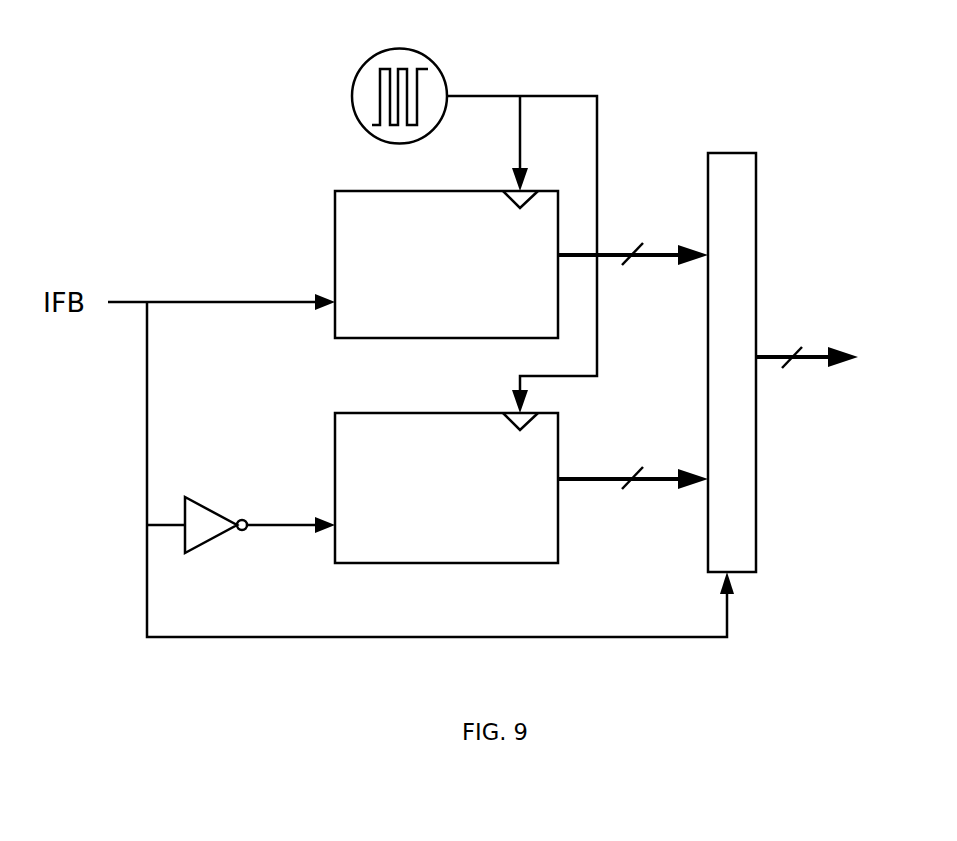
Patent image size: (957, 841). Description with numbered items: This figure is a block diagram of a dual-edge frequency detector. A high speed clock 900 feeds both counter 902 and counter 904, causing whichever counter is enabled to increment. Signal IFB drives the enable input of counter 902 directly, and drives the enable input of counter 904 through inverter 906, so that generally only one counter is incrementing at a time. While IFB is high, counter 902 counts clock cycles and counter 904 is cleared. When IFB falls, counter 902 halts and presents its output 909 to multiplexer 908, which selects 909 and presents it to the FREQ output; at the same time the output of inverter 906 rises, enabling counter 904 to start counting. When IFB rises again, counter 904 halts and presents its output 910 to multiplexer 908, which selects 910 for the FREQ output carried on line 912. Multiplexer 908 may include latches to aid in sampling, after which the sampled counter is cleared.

The high speed clock 900 is at (405, 58).
The counter 902 is at (340, 203).
The counter 904 is at (341, 425).
The inverter 906 is at (224, 521).
The multiplexer 908 is at (738, 163).
The output of counter 902 909 is at (665, 247).
The output of counter 904 910 is at (665, 471).
The frequency output FREQ 912 is at (815, 347).